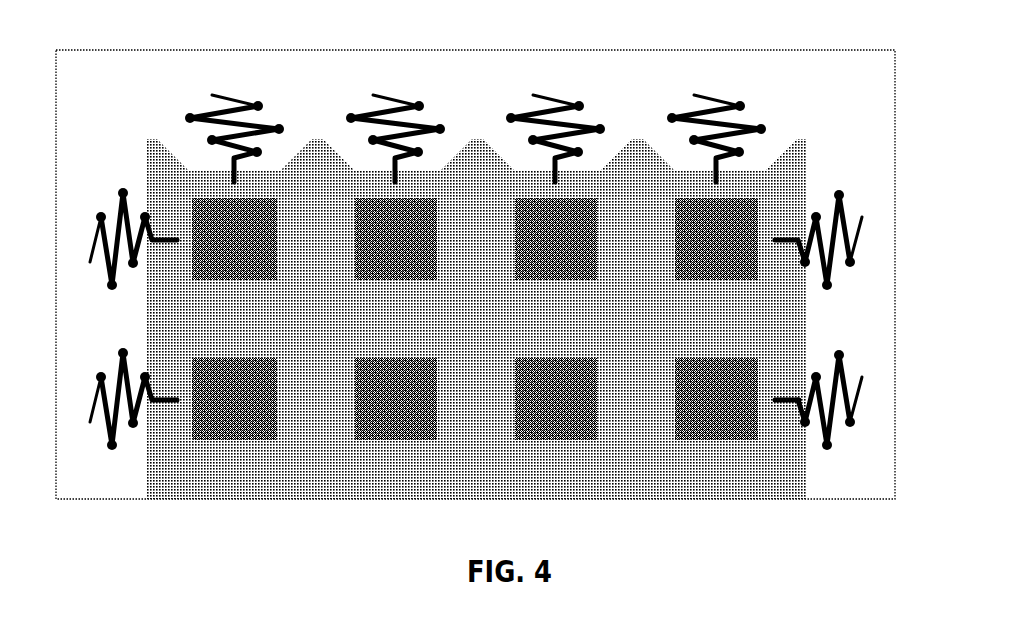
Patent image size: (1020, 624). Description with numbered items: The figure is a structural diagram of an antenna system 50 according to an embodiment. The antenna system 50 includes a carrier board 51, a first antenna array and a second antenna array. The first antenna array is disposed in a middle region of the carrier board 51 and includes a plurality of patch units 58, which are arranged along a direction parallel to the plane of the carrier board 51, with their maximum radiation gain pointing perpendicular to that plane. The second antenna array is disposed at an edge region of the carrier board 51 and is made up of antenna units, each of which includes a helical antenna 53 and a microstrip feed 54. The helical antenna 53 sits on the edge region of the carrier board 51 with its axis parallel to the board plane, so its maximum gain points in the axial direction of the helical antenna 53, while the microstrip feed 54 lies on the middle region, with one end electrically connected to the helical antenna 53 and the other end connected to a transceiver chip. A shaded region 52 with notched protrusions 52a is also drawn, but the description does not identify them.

The antenna system 50 is at (498, 21).
The carrier board 51 is at (878, 117).
The proof mass 52 is at (650, 488).
The protrusion 52a is at (603, 156).
The helical antenna 53 is at (859, 400).
The microstrip feed 54 is at (778, 395).
The patch unit 58 is at (280, 232).